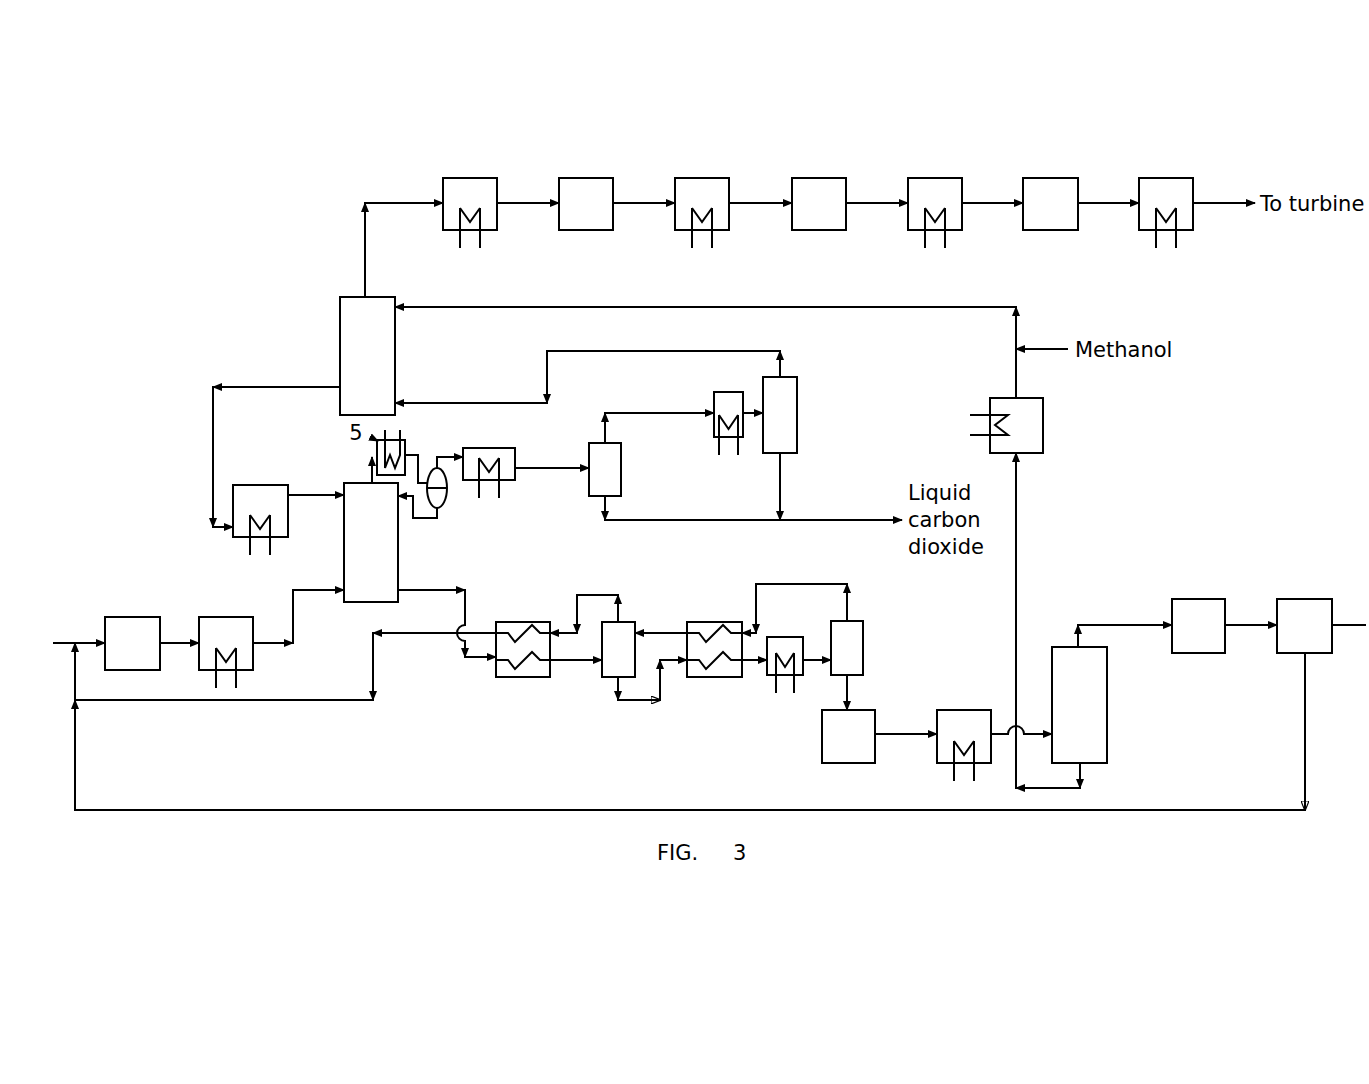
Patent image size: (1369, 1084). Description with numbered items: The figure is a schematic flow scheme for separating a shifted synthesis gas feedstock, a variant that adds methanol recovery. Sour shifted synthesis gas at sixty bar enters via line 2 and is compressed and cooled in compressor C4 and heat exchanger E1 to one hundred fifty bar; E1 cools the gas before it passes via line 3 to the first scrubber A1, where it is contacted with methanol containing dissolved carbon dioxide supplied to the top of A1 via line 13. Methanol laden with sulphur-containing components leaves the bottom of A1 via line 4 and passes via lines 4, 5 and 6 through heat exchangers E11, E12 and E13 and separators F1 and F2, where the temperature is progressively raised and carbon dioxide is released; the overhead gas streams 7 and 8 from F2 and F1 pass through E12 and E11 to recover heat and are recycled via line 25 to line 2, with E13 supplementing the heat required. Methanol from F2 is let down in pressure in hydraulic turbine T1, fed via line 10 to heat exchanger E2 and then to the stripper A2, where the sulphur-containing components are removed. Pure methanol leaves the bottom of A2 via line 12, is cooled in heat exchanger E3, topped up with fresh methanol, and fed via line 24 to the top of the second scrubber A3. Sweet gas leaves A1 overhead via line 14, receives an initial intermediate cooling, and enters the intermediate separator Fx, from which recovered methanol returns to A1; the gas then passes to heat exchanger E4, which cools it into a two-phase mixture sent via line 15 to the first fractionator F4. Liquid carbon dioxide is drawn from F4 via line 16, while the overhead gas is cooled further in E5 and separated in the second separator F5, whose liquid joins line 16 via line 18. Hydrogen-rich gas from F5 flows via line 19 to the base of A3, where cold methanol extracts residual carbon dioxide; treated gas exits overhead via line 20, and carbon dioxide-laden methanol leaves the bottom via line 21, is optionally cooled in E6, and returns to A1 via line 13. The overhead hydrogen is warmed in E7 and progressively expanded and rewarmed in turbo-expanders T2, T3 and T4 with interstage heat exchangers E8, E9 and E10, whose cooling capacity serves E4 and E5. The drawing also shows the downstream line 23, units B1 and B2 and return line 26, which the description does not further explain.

The feed line 2 is at (79, 631).
The line to first scrubber 3 is at (298, 603).
The scrubber bottoms line 4 is at (447, 610).
The solvent transfer line 5 is at (652, 690).
The solvent transfer line 6 is at (857, 692).
The overhead gas stream 7 is at (584, 600).
The overhead gas stream 8 is at (794, 595).
The methanol line to heat exchanger E2 10 is at (906, 720).
The pure methanol line 12 is at (1048, 620).
The methanol feed line to A1 13 is at (316, 481).
The sweet synthesis gas overhead line 14 is at (355, 468).
The two-phase mixture line 15 is at (552, 455).
The liquid carbon dioxide line 16 is at (753, 506).
The liquid carbon dioxide line from F5 18 is at (795, 486).
The hydrogen-rich gas line 19 is at (587, 364).
The treated gas overhead line 20 is at (404, 250).
The A3 bottoms line 21 is at (276, 444).
The heated gas stream to turbine 23 is at (1224, 190).
The methanol line to A3 24 is at (705, 340).
The recycle line 25 is at (285, 666).
The recycle stream from B2 26 is at (690, 731).
The separator Fx is at (449, 497).
The first scrubber A1 is at (388, 542).
The stripper A2 is at (1096, 705).
The second scrubber A3 is at (384, 356).
The blower B1 is at (1198, 613).
The blower B2 is at (1304, 613).
The compressor C4 is at (132, 630).
The heat exchanger E1 is at (226, 639).
The heat exchanger E2 is at (964, 732).
The heat exchanger E3 is at (1023, 425).
The heat exchanger system E4 is at (489, 460).
The heat exchanger E5 is at (728, 411).
The heat exchanger E6 is at (260, 507).
The heat exchanger E7 is at (470, 200).
The interstage heat exchanger E8 is at (702, 200).
The interstage heat exchanger E9 is at (935, 200).
The interstage heat exchanger E10 is at (1166, 200).
The heat exchanger E11 is at (523, 636).
The heat exchanger E12 is at (714, 636).
The heat exchanger E13 is at (785, 652).
The separator F1 is at (634, 636).
The separator F2 is at (862, 648).
The first fractionator F4 is at (620, 469).
The second separator F5 is at (795, 415).
The hydraulic turbine T1 is at (832, 736).
The turbo-expander T2 is at (586, 191).
The turbo-expander T3 is at (819, 191).
The turbo-expander T4 is at (1050, 191).